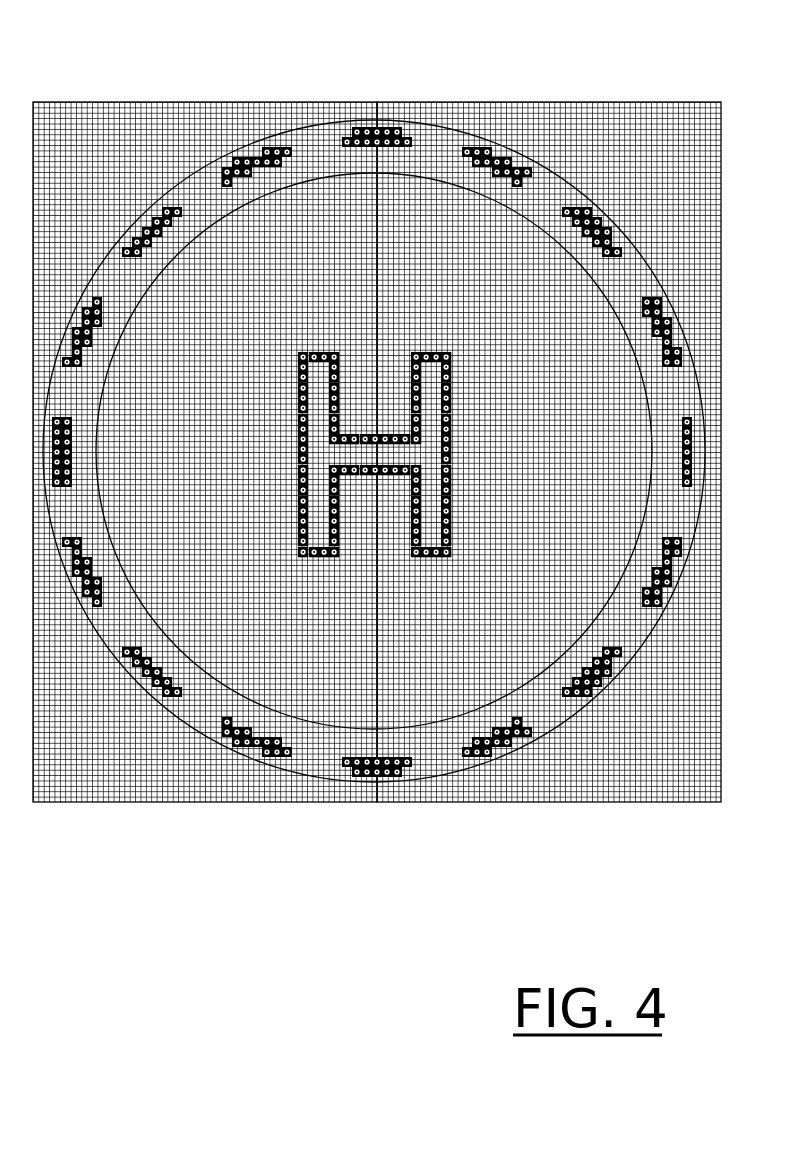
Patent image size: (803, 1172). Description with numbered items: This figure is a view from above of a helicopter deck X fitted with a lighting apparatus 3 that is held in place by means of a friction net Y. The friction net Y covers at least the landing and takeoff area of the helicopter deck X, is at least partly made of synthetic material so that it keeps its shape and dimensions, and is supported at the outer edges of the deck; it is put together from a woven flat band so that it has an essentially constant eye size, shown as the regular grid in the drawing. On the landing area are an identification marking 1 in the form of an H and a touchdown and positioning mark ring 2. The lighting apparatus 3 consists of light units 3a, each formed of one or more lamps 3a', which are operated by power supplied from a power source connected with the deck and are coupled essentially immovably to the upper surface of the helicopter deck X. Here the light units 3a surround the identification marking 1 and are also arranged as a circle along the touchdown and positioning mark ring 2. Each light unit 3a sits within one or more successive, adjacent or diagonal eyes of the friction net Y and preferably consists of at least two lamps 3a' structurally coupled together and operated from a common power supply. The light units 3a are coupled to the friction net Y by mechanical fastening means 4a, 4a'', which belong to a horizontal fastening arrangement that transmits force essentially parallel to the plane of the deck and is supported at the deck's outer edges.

The identification marking 1 is at (324, 563).
The touchdown and positioning mark ring 2 is at (298, 778).
The lighting apparatus 3 is at (358, 110).
The light unit 3a is at (393, 854).
The lamp 3a' is at (431, 859).
The fastening means 4a is at (526, 718).
The mechanical fastening means 4a'' is at (579, 733).
The helicopter deck X is at (116, 767).
The friction net Y is at (624, 150).